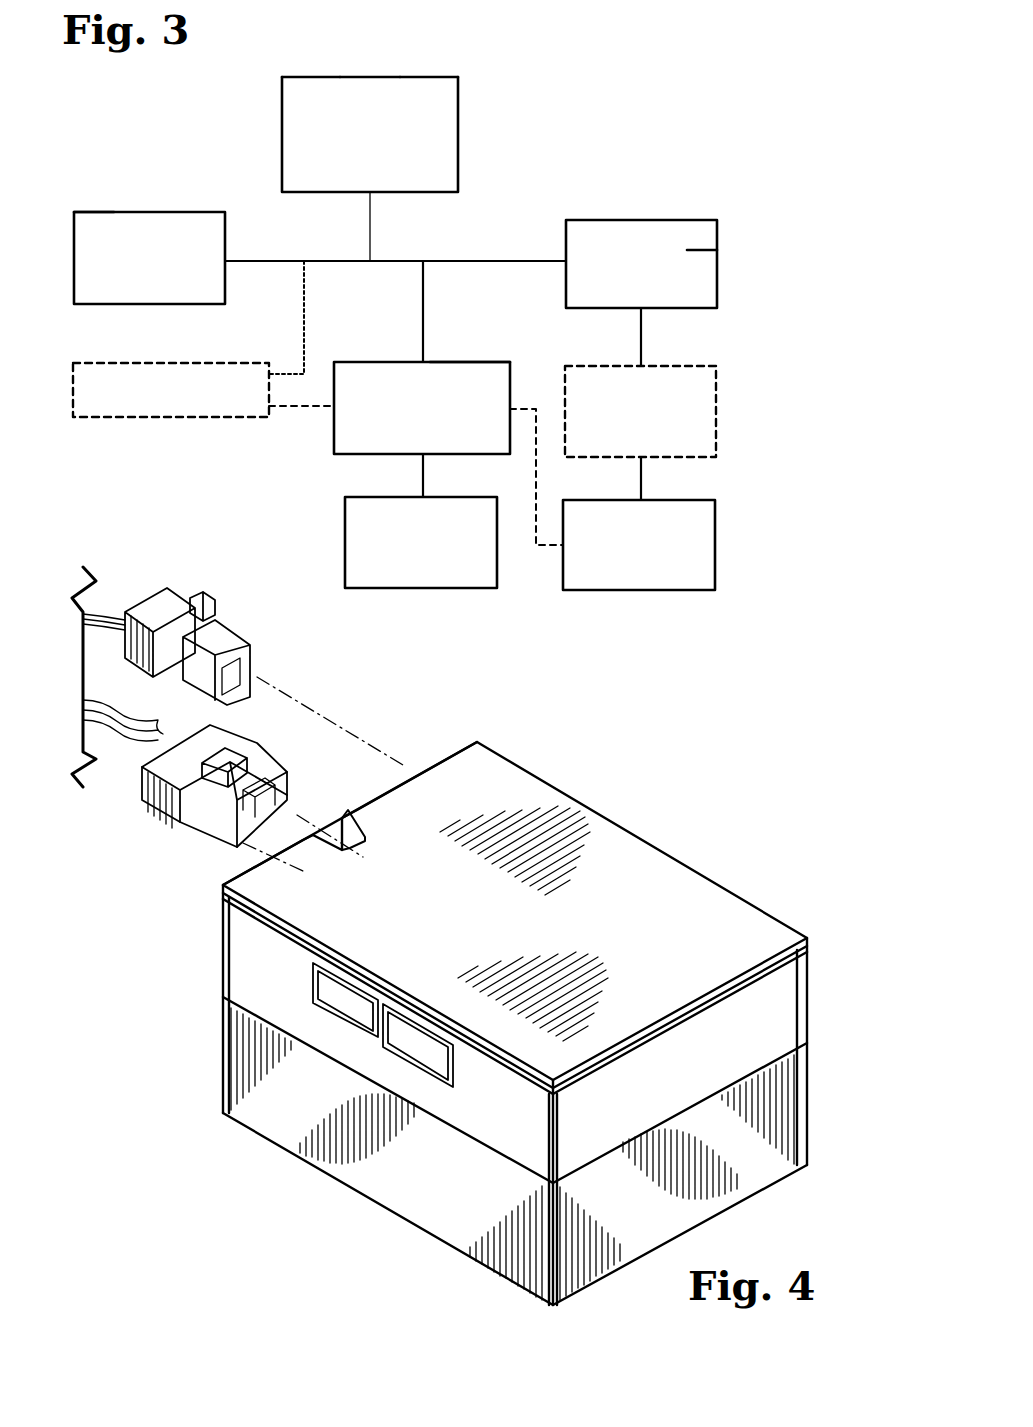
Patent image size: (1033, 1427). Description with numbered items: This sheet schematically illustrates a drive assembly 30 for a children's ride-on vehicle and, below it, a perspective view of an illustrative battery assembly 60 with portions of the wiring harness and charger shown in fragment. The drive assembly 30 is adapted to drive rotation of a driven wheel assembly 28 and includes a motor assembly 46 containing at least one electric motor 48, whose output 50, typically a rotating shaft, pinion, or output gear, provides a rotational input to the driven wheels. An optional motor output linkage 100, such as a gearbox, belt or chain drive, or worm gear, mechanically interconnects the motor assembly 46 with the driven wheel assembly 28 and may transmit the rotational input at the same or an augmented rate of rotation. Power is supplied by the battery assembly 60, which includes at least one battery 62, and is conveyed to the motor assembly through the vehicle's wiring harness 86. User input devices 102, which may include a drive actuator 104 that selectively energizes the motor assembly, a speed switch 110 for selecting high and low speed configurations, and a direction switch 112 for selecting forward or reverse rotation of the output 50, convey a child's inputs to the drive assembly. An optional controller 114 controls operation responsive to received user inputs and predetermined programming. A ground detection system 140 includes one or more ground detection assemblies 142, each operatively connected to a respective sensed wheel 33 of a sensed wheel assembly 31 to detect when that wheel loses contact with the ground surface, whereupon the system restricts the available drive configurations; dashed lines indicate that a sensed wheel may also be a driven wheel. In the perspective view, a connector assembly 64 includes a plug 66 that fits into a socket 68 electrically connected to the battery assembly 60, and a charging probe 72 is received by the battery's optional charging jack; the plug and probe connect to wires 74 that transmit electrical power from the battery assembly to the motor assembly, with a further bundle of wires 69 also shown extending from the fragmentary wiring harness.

In FIG. 3, the driven wheel assembly 28 is at (664, 500).
In FIG. 3, the drive assembly 30 is at (652, 138).
In FIG. 3, the sensed wheel assembly 31 is at (388, 494).
In FIG. 3, the sensed wheel 33 is at (442, 497).
In FIG. 3, the motor assembly 46 is at (668, 222).
In FIG. 3, the electric motor 48 is at (719, 278).
In FIG. 3, the output 50 is at (640, 352).
In FIG. 3, the battery assembly 60 is at (177, 211).
In FIG. 4, the battery assembly 60 is at (219, 1020).
In FIG. 3, the battery 62 is at (106, 212).
In FIG. 4, the battery 62 is at (219, 1077).
In FIG. 4, the connector assembly 64 is at (132, 902).
In FIG. 4, the plug 66 is at (170, 835).
In FIG. 4, the socket 68 is at (336, 807).
In FIG. 4, the wires 69 is at (118, 762).
In FIG. 4, the charging probe 72 is at (192, 584).
In FIG. 4, the wires 74 is at (102, 633).
In FIG. 3, the wiring harness 86 is at (481, 260).
In FIG. 3, the motor output linkage 100 is at (662, 366).
In FIG. 3, the user input devices 102 is at (432, 73).
In FIG. 3, the drive actuator 104 is at (291, 77).
In FIG. 3, the speed switch 110 is at (334, 77).
In FIG. 3, the direction switch 112 is at (391, 77).
In FIG. 3, the controller 114 is at (210, 363).
In FIG. 3, the ground detection system 140 is at (398, 361).
In FIG. 3, the ground detection assembly 142 is at (454, 362).